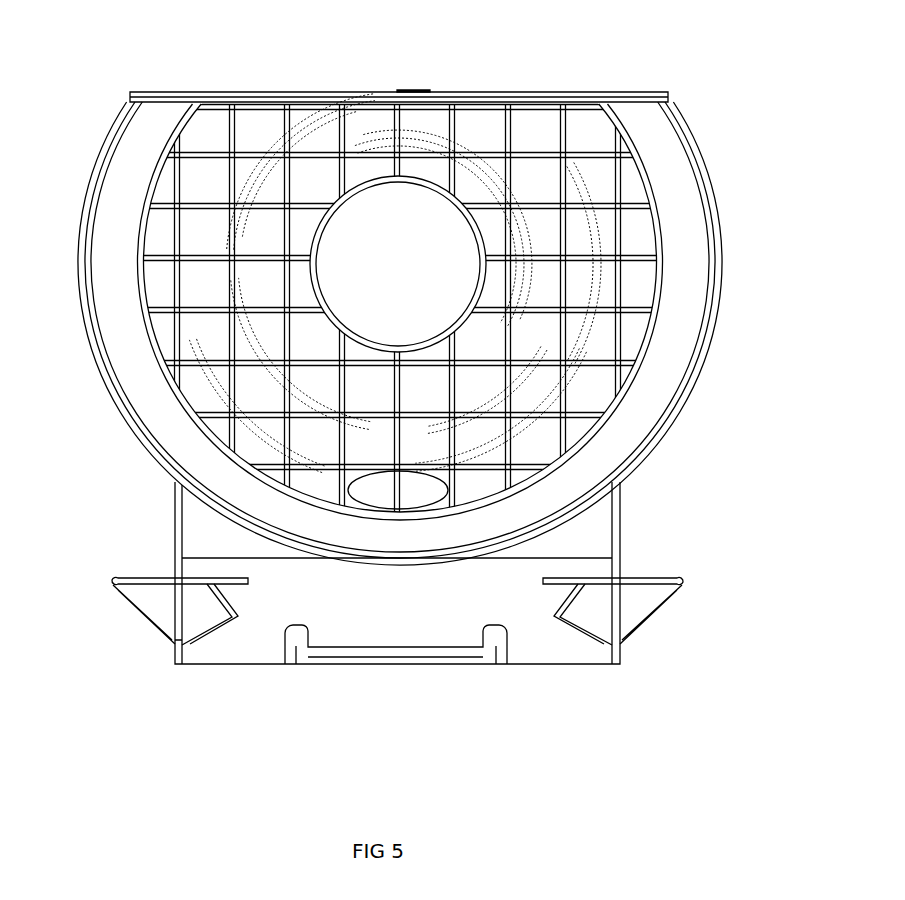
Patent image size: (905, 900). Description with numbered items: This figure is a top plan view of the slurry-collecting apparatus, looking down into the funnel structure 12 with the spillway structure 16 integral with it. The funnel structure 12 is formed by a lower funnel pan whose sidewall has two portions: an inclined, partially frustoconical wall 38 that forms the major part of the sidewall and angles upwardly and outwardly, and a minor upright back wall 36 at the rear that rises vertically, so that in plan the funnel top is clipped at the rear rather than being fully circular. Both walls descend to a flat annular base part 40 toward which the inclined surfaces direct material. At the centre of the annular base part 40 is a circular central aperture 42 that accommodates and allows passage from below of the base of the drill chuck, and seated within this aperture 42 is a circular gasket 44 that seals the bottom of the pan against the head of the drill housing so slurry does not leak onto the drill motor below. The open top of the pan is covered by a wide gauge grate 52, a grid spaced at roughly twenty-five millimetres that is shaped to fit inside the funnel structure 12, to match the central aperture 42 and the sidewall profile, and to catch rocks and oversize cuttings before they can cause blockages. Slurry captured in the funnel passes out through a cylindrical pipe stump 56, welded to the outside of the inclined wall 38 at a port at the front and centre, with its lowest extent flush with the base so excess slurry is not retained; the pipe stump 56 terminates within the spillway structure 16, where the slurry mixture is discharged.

The funnel structure 12 is at (737, 250).
The spillway structure 16 is at (233, 694).
The upright back wall 36 is at (513, 95).
The inclined partially frustoconical wall 38 is at (658, 407).
The annular base part 40 is at (210, 222).
The circular central aperture 42 is at (305, 290).
The circular gasket 44 is at (262, 227).
The wide gauge grate 52 is at (242, 118).
The cylindrical pipe stump 56 is at (383, 500).